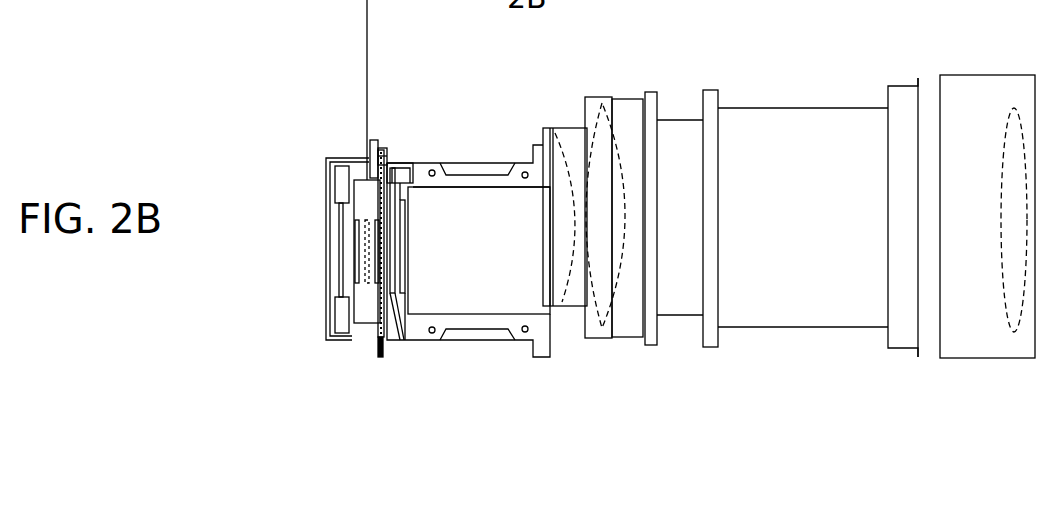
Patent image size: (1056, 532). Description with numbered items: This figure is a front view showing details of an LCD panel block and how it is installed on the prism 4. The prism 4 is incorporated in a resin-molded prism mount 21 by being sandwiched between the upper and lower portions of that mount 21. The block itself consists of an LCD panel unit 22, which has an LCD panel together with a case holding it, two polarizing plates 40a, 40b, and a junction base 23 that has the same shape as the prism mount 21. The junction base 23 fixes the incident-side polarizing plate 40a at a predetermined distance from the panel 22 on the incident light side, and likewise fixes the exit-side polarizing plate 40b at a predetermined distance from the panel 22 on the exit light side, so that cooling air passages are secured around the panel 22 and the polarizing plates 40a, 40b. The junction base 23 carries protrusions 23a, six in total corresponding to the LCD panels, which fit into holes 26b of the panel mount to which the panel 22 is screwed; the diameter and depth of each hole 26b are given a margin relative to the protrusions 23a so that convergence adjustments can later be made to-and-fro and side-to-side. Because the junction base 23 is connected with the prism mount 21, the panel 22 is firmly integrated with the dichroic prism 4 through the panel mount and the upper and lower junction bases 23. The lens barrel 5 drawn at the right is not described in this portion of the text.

The prism 4 is at (437, 295).
The lens barrel 5 is at (814, 303).
The prism mount 21 is at (508, 325).
The LCD panel unit 22 is at (347, 304).
The junction base 23 is at (357, 312).
The protrusions 23a is at (403, 160).
The holes 26b is at (382, 148).
The incident-side polarizing plate 40a is at (337, 229).
The exit-side polarizing plate 40b is at (398, 268).